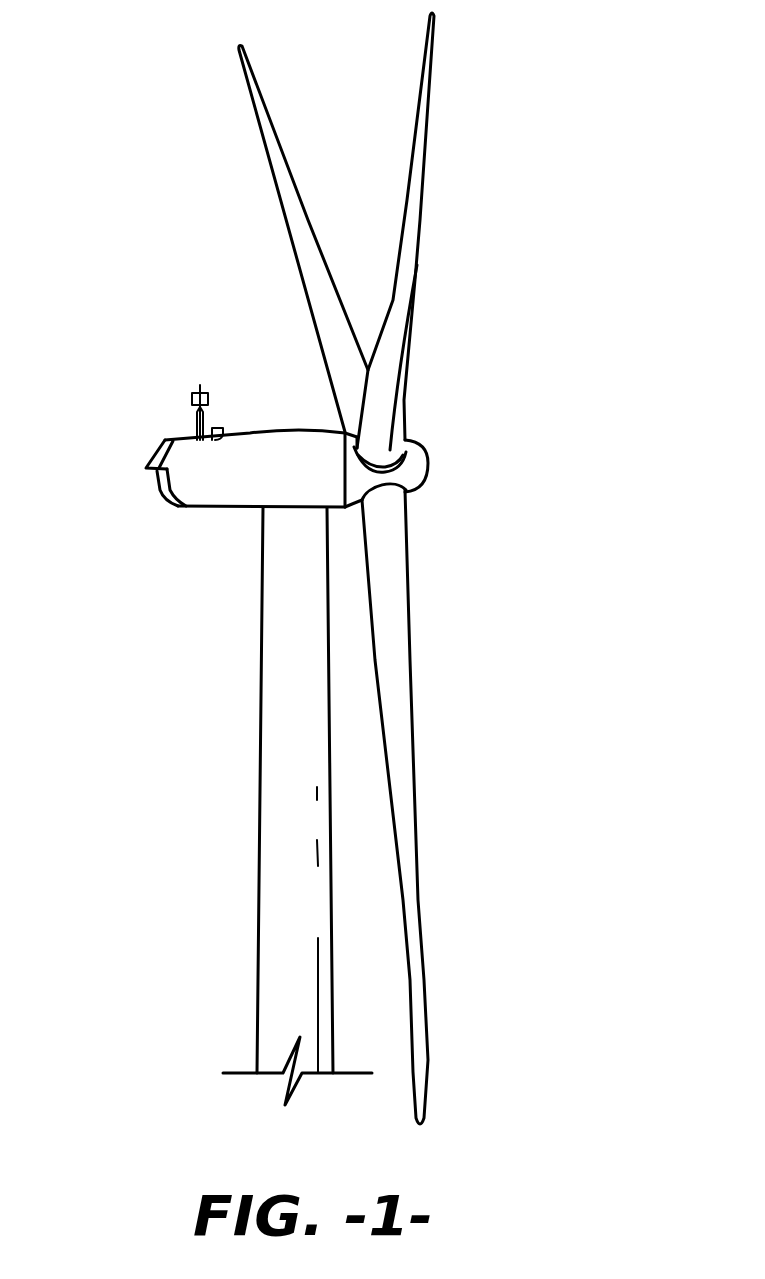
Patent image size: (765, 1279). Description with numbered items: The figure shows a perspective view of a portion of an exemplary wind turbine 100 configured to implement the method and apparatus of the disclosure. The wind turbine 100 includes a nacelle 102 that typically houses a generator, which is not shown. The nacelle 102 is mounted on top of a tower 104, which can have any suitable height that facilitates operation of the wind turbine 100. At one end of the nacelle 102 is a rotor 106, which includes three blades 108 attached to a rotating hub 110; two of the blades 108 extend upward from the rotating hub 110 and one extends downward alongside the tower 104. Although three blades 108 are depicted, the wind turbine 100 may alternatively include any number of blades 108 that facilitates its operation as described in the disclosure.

The wind turbine 100 is at (130, 137).
The nacelle 102 is at (209, 504).
The tower 104 is at (258, 868).
The rotor 106 is at (518, 306).
The blades 108 is at (279, 133).
The rotating hub 110 is at (429, 462).